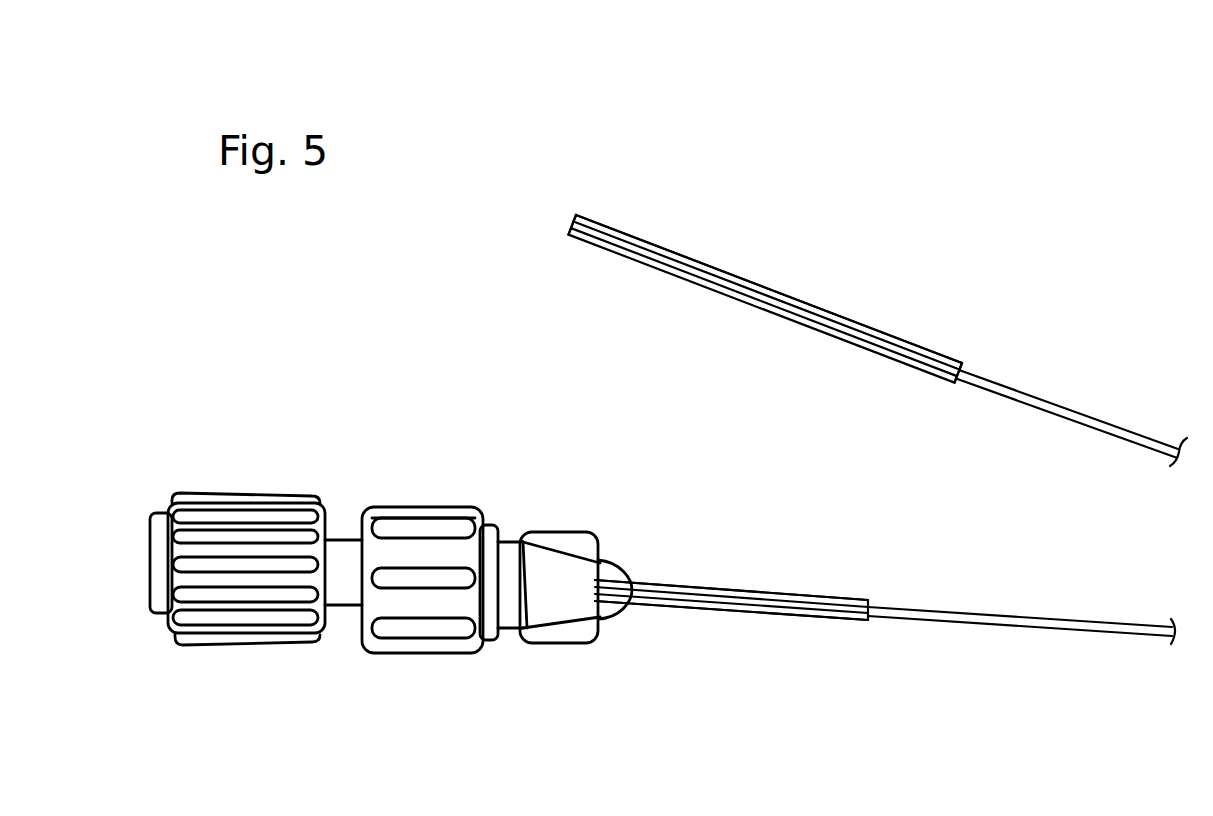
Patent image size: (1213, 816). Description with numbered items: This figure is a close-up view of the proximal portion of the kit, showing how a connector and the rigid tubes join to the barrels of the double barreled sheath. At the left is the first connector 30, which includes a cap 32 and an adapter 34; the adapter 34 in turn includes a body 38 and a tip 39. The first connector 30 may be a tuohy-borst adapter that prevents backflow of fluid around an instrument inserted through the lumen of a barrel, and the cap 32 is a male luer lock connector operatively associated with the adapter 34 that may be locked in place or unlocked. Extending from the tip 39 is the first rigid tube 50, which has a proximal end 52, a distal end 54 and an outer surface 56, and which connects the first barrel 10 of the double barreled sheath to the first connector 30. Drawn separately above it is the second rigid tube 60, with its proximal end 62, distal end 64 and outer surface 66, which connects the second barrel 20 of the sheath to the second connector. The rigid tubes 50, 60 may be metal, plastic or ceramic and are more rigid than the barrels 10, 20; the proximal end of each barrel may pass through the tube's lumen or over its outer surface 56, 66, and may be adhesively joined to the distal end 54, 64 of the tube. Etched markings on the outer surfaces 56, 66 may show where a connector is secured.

The first barrel 10 is at (1053, 616).
The second barrel 20 is at (1097, 420).
The first connector 30 is at (413, 653).
The cap 32 is at (232, 597).
The adapter 34 is at (570, 533).
The body 38 is at (422, 507).
The tip 39 is at (550, 643).
The first rigid tube 50 is at (710, 587).
The proximal end 52 is at (607, 600).
The distal end 54 is at (830, 618).
The outer surface 56 is at (837, 596).
The second rigid tube 60 is at (748, 281).
The proximal end 62 is at (598, 212).
The distal end 64 is at (923, 347).
The outer surface 66 is at (822, 306).